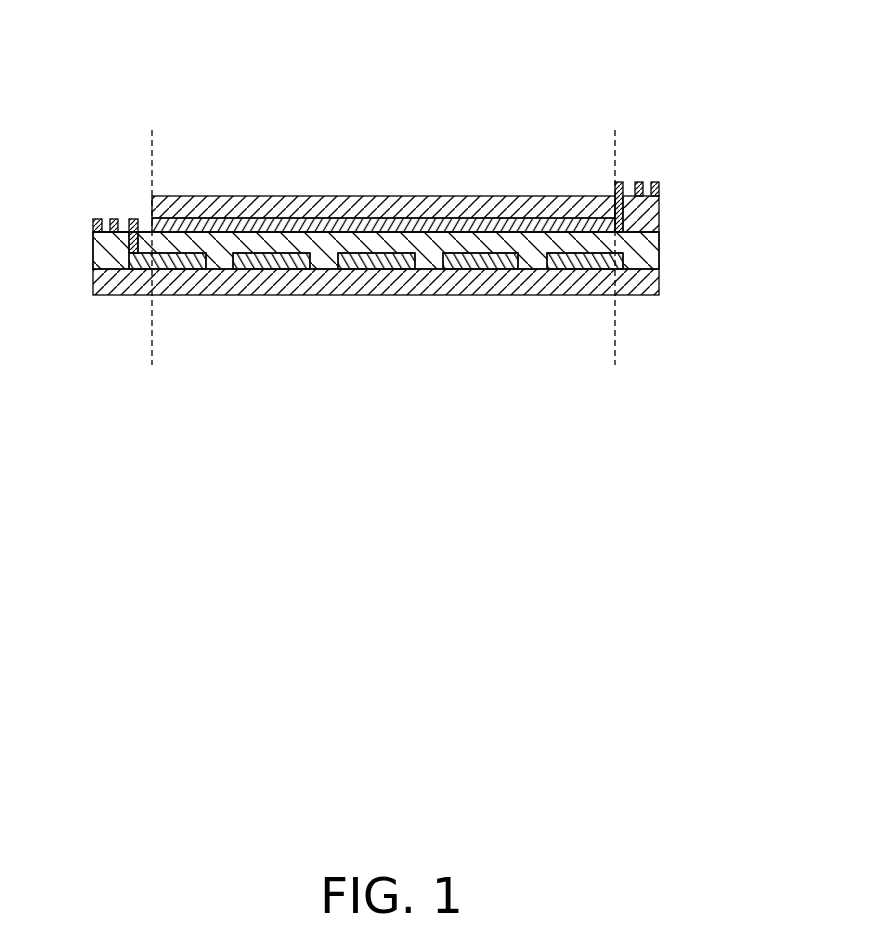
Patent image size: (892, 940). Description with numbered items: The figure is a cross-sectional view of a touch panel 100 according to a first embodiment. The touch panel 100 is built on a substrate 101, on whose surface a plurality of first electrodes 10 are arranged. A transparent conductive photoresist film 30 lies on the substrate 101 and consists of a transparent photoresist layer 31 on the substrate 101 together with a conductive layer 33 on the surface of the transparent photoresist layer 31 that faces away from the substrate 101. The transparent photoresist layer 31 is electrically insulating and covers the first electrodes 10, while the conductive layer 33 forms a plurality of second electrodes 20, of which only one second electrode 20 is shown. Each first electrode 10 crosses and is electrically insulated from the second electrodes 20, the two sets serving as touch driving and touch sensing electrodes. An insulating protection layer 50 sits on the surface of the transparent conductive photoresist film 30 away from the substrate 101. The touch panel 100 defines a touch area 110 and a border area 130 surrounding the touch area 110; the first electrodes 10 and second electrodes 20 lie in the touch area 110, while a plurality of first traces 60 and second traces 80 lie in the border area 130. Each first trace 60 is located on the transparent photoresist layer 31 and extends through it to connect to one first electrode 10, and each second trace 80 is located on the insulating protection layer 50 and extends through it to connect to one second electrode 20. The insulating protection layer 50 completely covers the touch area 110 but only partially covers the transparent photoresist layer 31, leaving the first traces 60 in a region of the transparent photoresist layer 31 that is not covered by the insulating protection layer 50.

The touch panel 100 is at (388, 33).
The substrate 101 is at (647, 283).
The first electrodes 10 is at (590, 262).
The second electrode 20 is at (397, 196).
The transparent conductive photoresist film 30 is at (438, 248).
The transparent photoresist layer 31 is at (640, 255).
The conductive layer 33 is at (640, 222).
The insulating protection layer 50 is at (647, 207).
The first traces 60 is at (133, 219).
The second traces 80 is at (640, 182).
The touch area 110 is at (383, 224).
The border area 130 is at (413, 165).